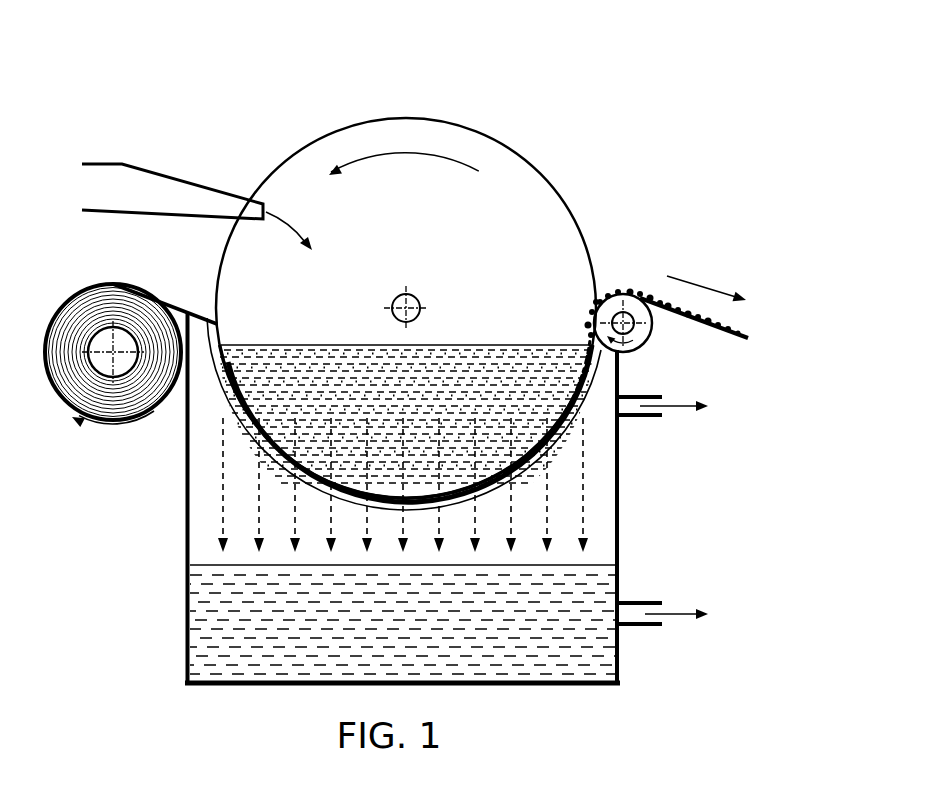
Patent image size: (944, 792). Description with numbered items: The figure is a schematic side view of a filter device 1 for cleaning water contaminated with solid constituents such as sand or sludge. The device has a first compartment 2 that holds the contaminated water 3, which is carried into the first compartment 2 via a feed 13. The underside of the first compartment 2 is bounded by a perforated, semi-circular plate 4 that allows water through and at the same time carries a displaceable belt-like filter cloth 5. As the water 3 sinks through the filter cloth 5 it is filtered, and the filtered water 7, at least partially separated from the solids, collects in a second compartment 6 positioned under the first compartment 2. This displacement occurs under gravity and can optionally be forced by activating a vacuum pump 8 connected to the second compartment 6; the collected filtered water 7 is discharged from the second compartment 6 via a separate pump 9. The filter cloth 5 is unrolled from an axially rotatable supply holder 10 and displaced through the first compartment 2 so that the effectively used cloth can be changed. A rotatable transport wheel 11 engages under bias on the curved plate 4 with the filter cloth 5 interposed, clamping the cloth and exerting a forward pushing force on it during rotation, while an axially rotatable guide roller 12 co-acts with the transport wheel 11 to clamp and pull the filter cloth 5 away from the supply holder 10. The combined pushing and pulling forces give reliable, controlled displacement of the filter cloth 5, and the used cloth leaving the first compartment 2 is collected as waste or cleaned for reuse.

The filter device 1 is at (614, 113).
The first compartment 2 is at (519, 343).
The water contaminated with solid constituents 3 is at (460, 375).
The perforated semi-circular plate 4 is at (224, 388).
The filter cloth 5 is at (243, 388).
The second compartment 6 is at (206, 545).
The filtered water 7 is at (203, 618).
The vacuum pump 8 is at (665, 413).
The pump 9 is at (663, 620).
The supply holder 10 is at (113, 296).
The transport wheel 11 is at (408, 138).
The guide roller 12 is at (648, 330).
The feed 13 is at (112, 180).